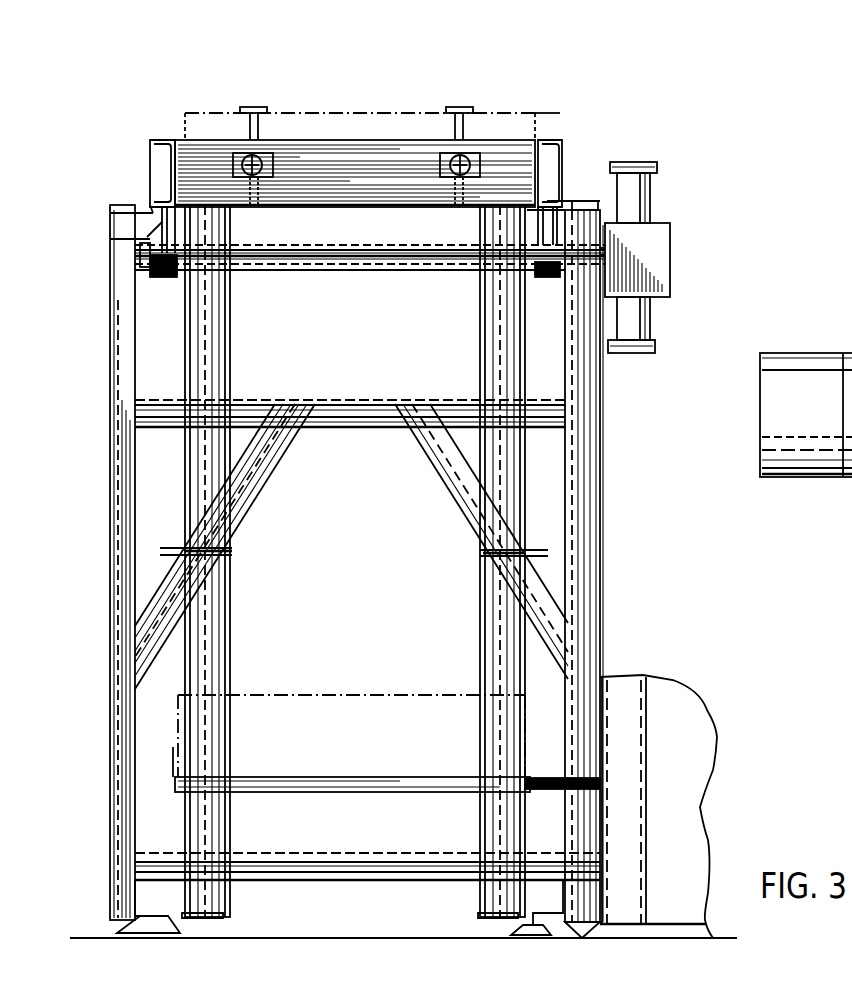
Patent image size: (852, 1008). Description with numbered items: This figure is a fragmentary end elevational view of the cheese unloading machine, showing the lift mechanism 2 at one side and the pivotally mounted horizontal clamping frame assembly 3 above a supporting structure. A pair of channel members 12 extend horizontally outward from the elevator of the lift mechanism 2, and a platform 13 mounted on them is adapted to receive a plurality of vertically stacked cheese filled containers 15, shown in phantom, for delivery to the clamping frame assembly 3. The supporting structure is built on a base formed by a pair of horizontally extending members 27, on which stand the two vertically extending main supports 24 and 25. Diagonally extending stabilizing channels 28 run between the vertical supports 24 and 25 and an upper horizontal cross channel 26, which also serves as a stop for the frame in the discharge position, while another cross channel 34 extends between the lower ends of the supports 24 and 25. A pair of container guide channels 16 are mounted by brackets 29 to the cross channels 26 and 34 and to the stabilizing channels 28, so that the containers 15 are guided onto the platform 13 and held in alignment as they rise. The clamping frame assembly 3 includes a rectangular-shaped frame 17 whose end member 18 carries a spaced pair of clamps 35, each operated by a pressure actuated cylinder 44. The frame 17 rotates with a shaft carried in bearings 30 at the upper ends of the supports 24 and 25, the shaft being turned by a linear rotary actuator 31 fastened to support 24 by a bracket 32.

The lift mechanism 2 is at (716, 772).
The clamping frame assembly 3 is at (540, 140).
The channel members 12 is at (547, 785).
The platform 13 is at (284, 777).
The cheese filled containers 15 is at (305, 110).
The container guide channels 16 is at (230, 658).
The rectangular-shaped frame 17 is at (172, 128).
The end member 18 is at (386, 144).
The vertically extending main support 24 is at (117, 602).
The vertically extending main support 25 is at (600, 557).
The upper horizontal cross channel 26 is at (261, 399).
The horizontally extending members 27 is at (166, 934).
The diagonally extending stabilizing channels 28 is at (250, 513).
The brackets 29 is at (528, 550).
The bearings 30 is at (806, 389).
The linear rotary actuator 31 is at (653, 192).
The bracket 32 is at (667, 223).
The cross channel 34 is at (394, 867).
The clamp 35 is at (539, 94).
The pressure actuated cylinder 44 is at (480, 165).